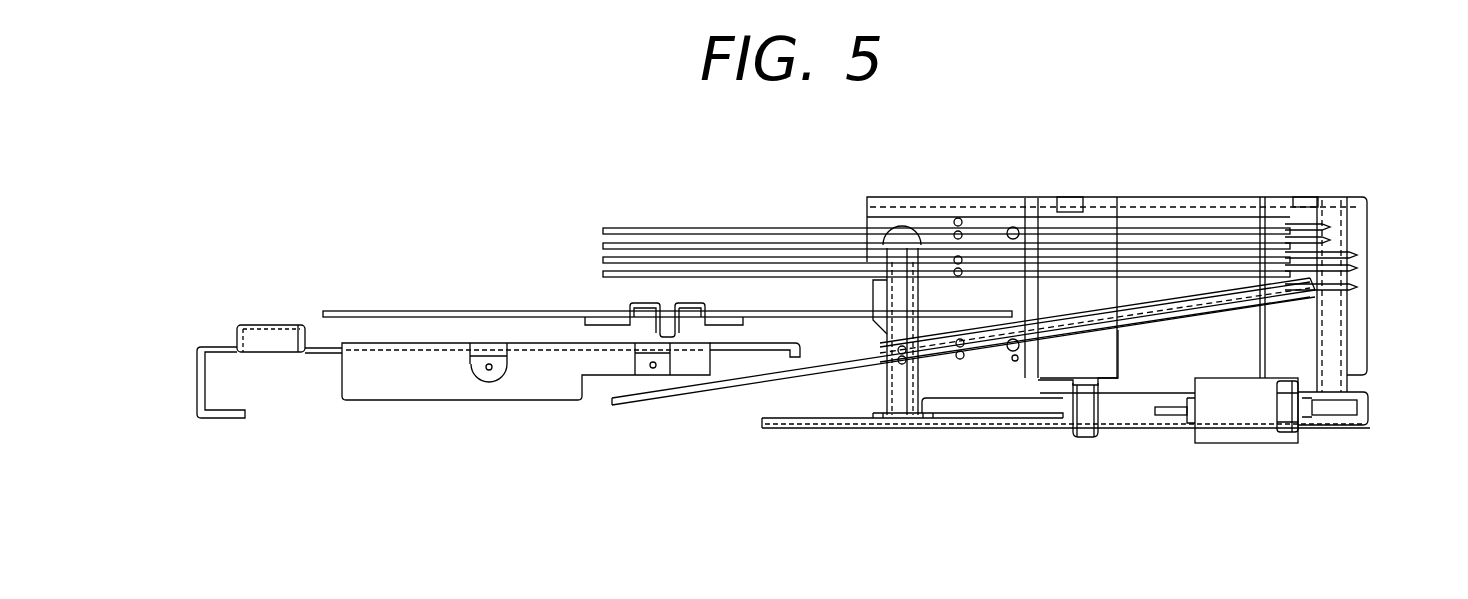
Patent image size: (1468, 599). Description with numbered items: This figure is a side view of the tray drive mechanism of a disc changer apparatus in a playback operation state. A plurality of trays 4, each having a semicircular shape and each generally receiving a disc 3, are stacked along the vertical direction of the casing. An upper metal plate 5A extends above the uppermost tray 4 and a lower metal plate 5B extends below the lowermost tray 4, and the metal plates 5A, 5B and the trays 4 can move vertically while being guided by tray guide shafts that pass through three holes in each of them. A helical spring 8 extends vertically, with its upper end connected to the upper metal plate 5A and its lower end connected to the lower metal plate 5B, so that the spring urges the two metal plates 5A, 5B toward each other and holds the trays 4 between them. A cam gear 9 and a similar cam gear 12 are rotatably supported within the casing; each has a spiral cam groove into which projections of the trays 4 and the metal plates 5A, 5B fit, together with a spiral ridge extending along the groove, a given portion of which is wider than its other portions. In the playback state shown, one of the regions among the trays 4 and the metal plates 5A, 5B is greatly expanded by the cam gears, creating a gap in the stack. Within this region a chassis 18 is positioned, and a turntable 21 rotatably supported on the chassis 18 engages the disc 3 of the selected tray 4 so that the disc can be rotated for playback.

The disc 3 is at (733, 230).
The tray 4 is at (1180, 232).
The upper metal plate 5A is at (1132, 217).
The lower metal plate 5B is at (1165, 338).
The helical spring 8 is at (1043, 268).
The cam gear 9 is at (1330, 340).
The cam gear 12 is at (903, 373).
The chassis 18 is at (410, 378).
The turntable 21 is at (593, 327).